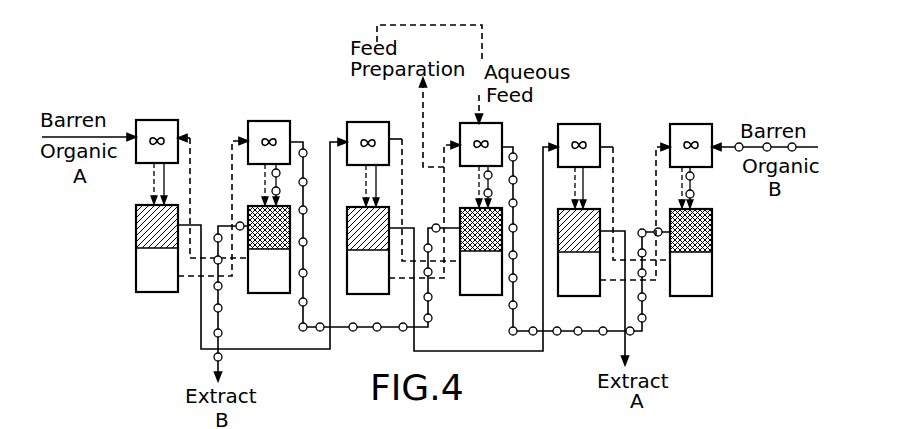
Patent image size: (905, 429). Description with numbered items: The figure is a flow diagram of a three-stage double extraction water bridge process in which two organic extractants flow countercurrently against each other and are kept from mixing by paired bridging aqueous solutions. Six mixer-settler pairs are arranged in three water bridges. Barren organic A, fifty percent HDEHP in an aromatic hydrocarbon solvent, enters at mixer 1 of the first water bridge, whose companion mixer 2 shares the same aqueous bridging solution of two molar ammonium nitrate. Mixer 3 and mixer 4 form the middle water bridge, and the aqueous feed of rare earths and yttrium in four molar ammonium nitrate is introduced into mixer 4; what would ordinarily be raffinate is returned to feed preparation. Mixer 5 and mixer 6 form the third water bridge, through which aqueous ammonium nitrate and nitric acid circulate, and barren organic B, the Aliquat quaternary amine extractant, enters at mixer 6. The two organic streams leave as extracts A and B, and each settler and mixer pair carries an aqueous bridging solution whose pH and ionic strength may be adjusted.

The mixer 1 is at (157, 219).
The mixer 2 is at (269, 220).
The mixer 3 is at (368, 221).
The mixer 4 is at (481, 222).
The mixer 5 is at (579, 223).
The mixer 6 is at (691, 223).